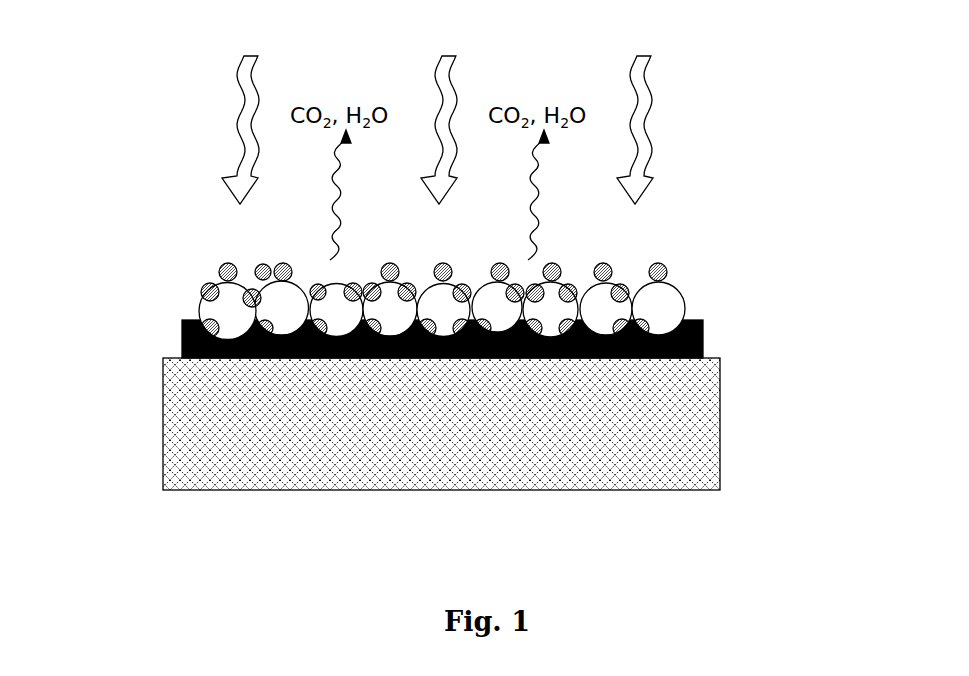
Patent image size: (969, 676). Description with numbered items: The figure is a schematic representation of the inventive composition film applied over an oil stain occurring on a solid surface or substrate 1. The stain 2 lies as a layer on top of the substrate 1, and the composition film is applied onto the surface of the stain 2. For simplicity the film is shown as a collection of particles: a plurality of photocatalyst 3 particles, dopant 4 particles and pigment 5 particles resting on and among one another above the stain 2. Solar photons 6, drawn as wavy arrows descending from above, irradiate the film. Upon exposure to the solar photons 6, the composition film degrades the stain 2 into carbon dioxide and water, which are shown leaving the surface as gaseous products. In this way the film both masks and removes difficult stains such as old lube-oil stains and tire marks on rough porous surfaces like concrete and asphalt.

The substrate 1 is at (720, 433).
The stain 2 is at (707, 337).
The photocatalyst particles 3 is at (683, 300).
The dopant particles 4 is at (667, 262).
The pigment particles 5 is at (200, 283).
The solar photons 6 is at (240, 150).